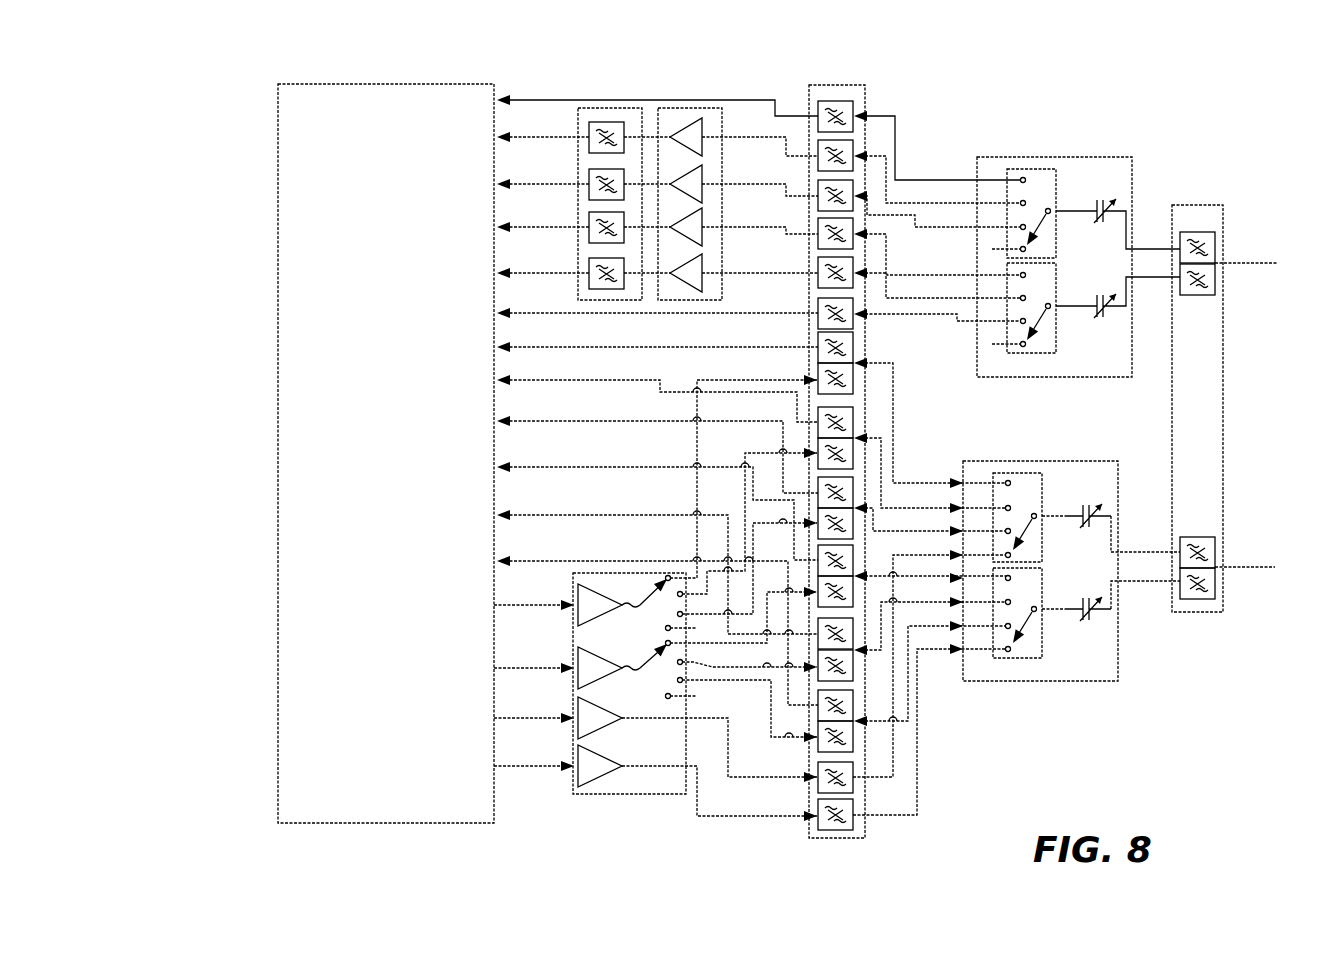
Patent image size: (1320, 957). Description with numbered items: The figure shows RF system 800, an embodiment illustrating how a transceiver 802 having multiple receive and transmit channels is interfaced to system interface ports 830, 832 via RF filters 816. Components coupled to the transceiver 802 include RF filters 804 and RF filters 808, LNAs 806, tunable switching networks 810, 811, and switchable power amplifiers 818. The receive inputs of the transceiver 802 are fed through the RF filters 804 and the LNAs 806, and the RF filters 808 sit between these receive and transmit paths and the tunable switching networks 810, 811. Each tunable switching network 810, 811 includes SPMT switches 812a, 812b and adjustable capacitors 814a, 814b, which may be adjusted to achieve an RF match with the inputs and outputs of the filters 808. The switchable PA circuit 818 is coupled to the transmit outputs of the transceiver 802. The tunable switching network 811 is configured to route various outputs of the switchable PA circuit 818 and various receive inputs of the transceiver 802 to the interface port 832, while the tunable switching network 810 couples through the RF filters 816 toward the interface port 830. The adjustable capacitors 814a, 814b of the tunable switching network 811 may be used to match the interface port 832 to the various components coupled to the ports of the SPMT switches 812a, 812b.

The RF system 800 is at (192, 82).
The transceiver 802 is at (398, 84).
The RF filters 804 is at (577, 130).
The LNAs 806 is at (722, 168).
The RF filters 808 is at (827, 85).
The tunable switching network 810 is at (1020, 157).
The tunable switching network 811 is at (1020, 461).
The SPMT switch 812a is at (1056, 180).
The SPMT switch 812b is at (1056, 273).
The adjustable capacitor 814a is at (1100, 230).
The adjustable capacitor 814b is at (1100, 325).
The RF filters 816 is at (1206, 205).
The switchable power amplifiers 818 is at (573, 641).
The system interface port 830 is at (1257, 263).
The system interface port 832 is at (1259, 567).